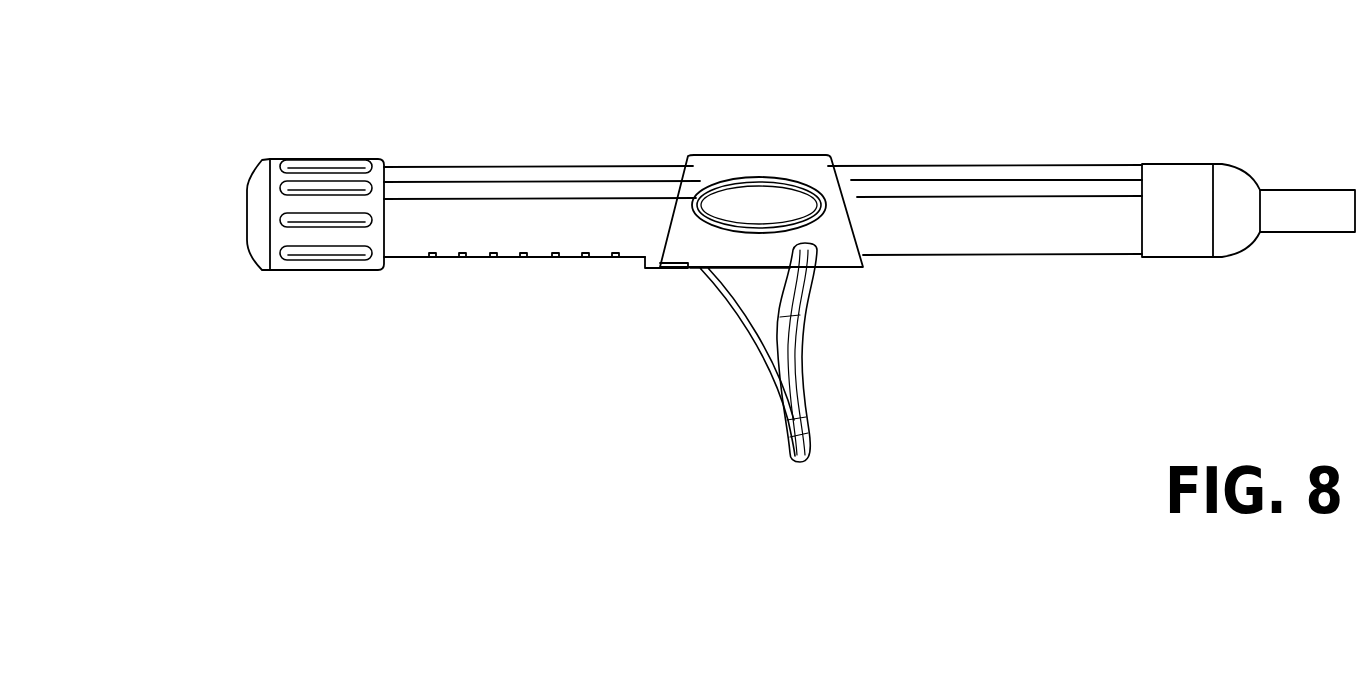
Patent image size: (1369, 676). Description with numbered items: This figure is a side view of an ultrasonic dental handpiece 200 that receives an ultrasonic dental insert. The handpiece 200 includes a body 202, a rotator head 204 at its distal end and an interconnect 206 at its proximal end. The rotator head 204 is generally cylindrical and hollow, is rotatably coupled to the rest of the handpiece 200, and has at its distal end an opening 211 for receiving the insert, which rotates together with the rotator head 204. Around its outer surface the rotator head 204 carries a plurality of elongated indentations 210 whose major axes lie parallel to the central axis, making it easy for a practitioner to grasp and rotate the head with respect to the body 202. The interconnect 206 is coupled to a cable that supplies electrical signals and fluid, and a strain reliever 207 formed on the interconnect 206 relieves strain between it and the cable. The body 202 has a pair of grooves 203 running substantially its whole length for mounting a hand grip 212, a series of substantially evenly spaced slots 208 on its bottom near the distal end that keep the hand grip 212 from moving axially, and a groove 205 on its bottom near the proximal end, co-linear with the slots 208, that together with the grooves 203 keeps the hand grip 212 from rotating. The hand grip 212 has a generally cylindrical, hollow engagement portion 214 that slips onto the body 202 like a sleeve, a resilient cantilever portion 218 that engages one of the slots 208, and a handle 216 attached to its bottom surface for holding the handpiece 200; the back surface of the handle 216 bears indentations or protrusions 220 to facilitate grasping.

The handpiece 200 is at (732, 305).
The body 202 is at (588, 167).
The grooves 203 is at (452, 187).
The rotator head 204 is at (247, 222).
The groove 205 is at (1055, 256).
The interconnect 206 is at (1172, 170).
The strain reliever 207 is at (1288, 225).
The slots 208 is at (431, 258).
The indentations 210 is at (305, 222).
The opening 211 is at (247, 212).
The hand grip 212 is at (836, 323).
The engagement portion 214 is at (737, 156).
The handle 216 is at (778, 388).
The resilient cantilever portion 218 is at (644, 262).
The indentations or protrusions 220 is at (802, 352).